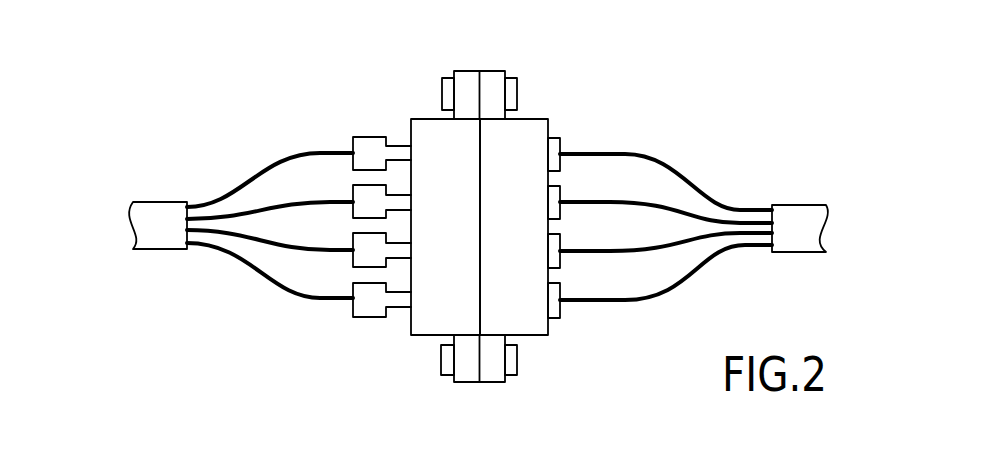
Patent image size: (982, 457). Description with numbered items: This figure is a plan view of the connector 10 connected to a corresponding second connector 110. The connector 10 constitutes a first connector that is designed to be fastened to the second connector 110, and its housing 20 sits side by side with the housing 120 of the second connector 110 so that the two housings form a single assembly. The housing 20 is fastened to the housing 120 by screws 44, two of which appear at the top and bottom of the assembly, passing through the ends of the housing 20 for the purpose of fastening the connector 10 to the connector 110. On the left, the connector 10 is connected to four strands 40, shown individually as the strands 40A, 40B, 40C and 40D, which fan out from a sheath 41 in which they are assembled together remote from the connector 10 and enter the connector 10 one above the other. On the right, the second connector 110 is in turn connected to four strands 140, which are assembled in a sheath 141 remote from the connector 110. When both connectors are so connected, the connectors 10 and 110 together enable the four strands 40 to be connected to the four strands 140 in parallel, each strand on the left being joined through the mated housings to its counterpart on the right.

The connector 10 is at (397, 249).
The housing 20 is at (433, 137).
The strands 40 is at (270, 212).
The strand 40A is at (333, 152).
The strand 40B is at (333, 202).
The strand 40C is at (333, 250).
The strand 40D is at (333, 300).
The sheath 41 is at (153, 213).
The screws 44 is at (450, 82).
The second connector 110 is at (568, 249).
The housing 120 is at (528, 137).
The strands 140 is at (703, 165).
The sheath 141 is at (807, 217).